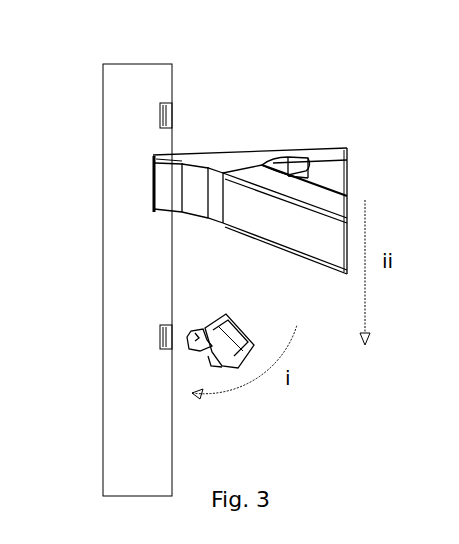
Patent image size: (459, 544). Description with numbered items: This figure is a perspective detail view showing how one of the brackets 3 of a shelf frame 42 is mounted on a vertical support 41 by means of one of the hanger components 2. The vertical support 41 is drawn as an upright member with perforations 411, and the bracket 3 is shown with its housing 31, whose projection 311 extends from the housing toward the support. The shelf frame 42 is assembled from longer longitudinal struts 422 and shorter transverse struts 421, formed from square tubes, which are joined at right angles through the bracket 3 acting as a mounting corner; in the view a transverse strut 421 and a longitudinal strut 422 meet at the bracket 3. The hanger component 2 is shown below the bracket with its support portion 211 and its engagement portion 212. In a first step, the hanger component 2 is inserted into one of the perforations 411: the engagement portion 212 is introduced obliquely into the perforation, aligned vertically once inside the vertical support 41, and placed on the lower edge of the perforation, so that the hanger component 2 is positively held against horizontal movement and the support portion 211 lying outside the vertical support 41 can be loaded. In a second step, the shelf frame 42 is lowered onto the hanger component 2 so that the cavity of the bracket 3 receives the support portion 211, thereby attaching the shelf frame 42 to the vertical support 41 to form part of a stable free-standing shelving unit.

The hanger component 2 is at (142, 329).
The support portion 211 is at (217, 325).
The engagement portion 212 is at (200, 353).
The bracket 3 is at (209, 245).
The housing 31 is at (209, 245).
The projection 311 is at (170, 193).
The vertical support 41 is at (101, 83).
The perforation 411 is at (170, 108).
The shelf frame 42 is at (325, 116).
The transverse strut 421 is at (315, 243).
The longitudinal strut 422 is at (316, 160).